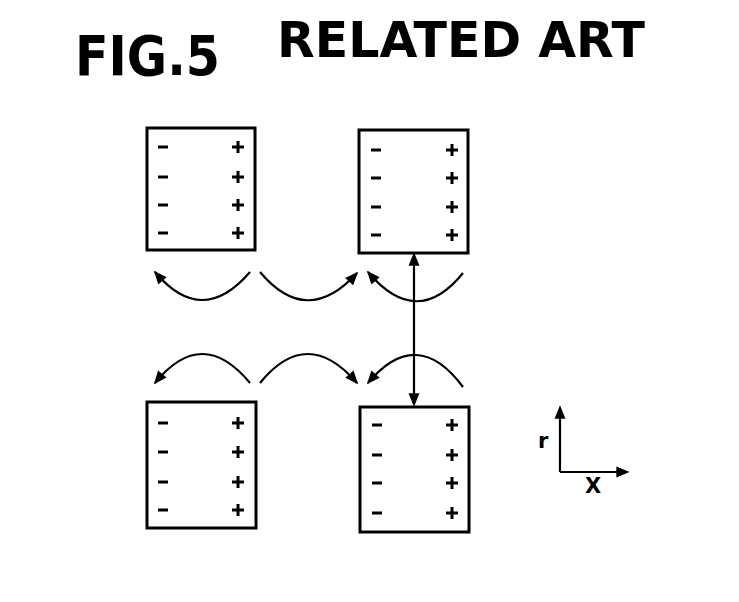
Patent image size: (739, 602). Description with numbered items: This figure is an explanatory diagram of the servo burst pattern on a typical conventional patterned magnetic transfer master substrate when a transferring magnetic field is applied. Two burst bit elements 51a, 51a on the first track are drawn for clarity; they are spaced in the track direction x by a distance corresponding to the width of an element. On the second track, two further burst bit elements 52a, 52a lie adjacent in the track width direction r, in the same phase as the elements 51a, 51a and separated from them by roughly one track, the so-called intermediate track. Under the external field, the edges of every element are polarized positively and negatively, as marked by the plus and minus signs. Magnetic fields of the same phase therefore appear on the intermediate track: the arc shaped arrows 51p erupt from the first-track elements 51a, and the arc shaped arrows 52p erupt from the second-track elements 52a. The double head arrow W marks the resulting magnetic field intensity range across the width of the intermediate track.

The burst bit element 51a is at (197, 138).
The burst bit element 52a is at (200, 520).
The arc shaped arrow 51p is at (197, 300).
The arc shaped arrow 52p is at (210, 352).
The double head arrow W is at (415, 328).